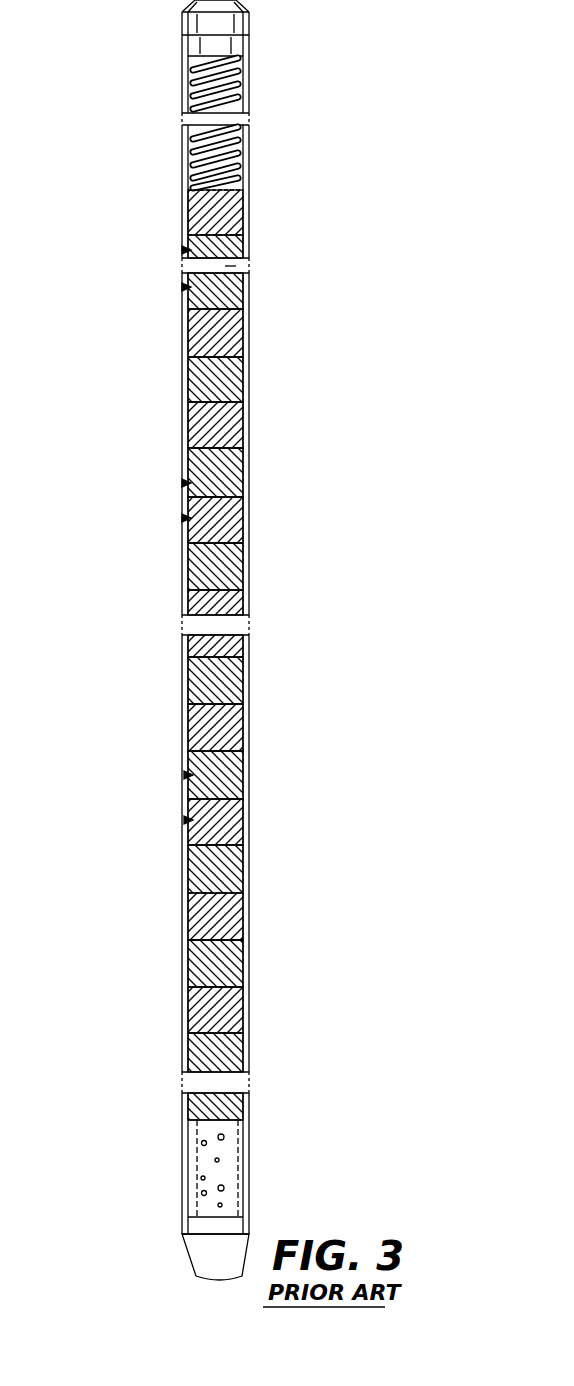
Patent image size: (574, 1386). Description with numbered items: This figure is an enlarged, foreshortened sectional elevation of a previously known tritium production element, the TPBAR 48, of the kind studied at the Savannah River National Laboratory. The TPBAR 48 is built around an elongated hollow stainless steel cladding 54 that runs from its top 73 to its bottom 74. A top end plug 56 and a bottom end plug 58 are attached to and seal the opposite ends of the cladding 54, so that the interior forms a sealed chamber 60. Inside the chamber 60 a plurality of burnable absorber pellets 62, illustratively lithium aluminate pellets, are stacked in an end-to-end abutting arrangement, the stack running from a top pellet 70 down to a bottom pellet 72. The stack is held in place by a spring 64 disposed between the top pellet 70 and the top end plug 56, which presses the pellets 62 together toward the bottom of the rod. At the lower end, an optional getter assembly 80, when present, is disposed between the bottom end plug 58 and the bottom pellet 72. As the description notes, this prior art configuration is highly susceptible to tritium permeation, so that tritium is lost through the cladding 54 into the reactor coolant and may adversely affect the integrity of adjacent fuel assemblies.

The TPBAR 48 is at (293, 734).
The cladding 54 is at (186, 425).
The top end plug 56 is at (196, 42).
The bottom end plug 58 is at (205, 1254).
The sealed chamber 60 is at (248, 267).
The burnable absorber pellets 62 is at (184, 287).
The spring 64 is at (192, 152).
The top pellet 70 is at (242, 218).
The bottom pellet 72 is at (196, 1108).
The top 73 is at (229, 54).
The bottom 74 is at (184, 1177).
The getter assembly 80 is at (228, 1152).